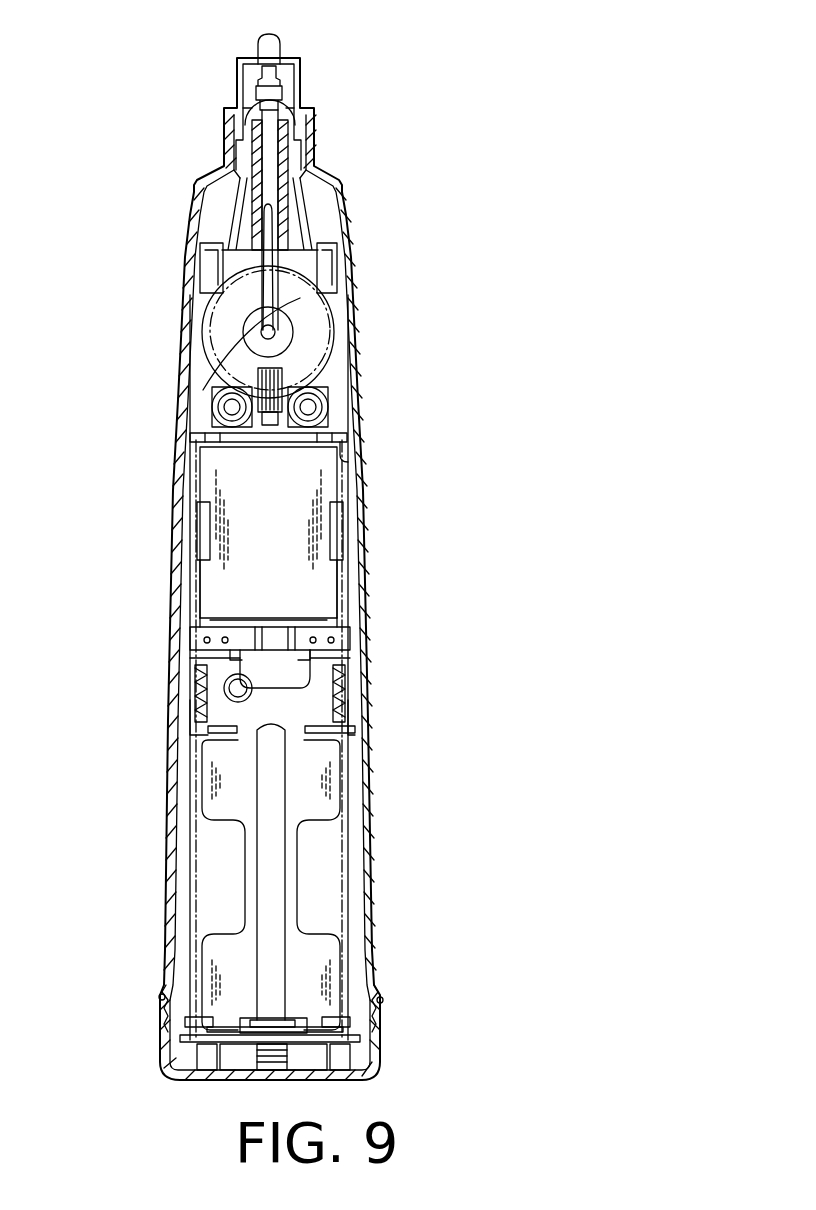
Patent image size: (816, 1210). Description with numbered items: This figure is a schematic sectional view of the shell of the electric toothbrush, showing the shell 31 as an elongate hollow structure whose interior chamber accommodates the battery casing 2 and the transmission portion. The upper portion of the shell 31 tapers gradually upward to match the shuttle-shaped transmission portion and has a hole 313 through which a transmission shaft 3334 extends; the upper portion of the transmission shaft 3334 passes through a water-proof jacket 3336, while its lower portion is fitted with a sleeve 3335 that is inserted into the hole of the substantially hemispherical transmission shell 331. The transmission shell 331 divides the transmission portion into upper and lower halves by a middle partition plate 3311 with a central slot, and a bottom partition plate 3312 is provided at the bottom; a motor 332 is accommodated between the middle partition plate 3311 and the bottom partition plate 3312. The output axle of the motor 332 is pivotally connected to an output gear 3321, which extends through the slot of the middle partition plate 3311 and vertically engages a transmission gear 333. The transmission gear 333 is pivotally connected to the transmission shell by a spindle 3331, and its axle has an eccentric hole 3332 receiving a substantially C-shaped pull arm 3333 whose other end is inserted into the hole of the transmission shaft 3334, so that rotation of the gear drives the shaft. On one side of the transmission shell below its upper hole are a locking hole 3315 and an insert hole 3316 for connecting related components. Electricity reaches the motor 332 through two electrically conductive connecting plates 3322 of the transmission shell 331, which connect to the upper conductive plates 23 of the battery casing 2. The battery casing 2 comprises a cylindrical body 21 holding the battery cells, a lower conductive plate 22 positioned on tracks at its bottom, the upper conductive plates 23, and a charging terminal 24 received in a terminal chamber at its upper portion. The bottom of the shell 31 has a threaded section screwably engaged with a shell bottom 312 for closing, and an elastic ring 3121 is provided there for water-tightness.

The shell 31 is at (196, 212).
The hole 313 is at (252, 72).
The transmission shaft 3334 is at (278, 44).
The water-proof jacket 3336 is at (283, 97).
The sleeve 3335 is at (290, 150).
The transmission shell 331 is at (302, 228).
The transmission gear 333 is at (335, 327).
The spindle 3331 is at (275, 338).
The pull arm 3333 is at (252, 305).
The eccentric hole 3332 is at (258, 365).
The output gear 3321 is at (285, 378).
The locking hole 3315 is at (226, 411).
The insert hole 3316 is at (327, 412).
The middle partition plate 3311 is at (341, 445).
The motor 332 is at (232, 478).
The bottom partition plate 3312 is at (305, 622).
The lower conductive plate 22 is at (200, 680).
The electrically conductive connecting plates 3322 is at (198, 720).
The charging terminal 24 is at (240, 722).
The battery casing 2 is at (327, 808).
The cylindrical body 21 is at (330, 950).
The upper conductive plates 23 is at (383, 1002).
The shell bottom 312 is at (373, 1037).
The elastic ring 3121 is at (160, 996).